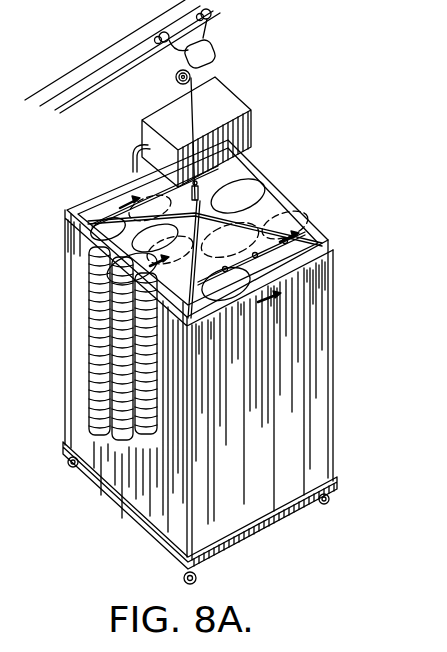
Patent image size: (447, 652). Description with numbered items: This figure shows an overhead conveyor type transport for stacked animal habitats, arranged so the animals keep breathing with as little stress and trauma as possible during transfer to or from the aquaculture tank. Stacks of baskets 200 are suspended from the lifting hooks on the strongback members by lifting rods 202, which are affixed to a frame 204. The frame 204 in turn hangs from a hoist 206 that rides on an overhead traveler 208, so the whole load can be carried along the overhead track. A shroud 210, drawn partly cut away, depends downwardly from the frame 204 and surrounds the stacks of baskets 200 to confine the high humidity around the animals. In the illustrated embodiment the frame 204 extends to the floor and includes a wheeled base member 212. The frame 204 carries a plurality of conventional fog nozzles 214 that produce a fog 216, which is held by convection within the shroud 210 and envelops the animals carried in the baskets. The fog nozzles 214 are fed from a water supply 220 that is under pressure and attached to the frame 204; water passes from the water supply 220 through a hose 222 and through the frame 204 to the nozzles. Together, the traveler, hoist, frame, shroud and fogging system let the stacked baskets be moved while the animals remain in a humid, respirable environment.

The stacks of baskets 200 is at (143, 367).
The lifting rods 202 is at (242, 181).
The frame 204 is at (334, 222).
The hoist 206 is at (226, 43).
The overhead traveler 208 is at (138, 25).
The shroud 210 is at (333, 347).
The wheeled base member 212 is at (339, 479).
The fog nozzles 214 is at (266, 268).
The fog 216 is at (285, 218).
The water supply 220 is at (237, 98).
The hose 222 is at (131, 157).